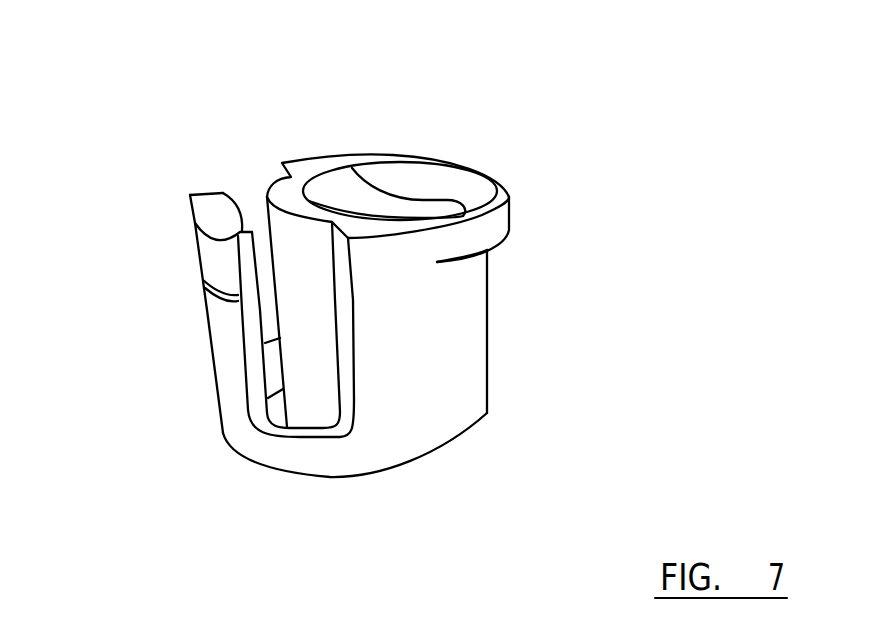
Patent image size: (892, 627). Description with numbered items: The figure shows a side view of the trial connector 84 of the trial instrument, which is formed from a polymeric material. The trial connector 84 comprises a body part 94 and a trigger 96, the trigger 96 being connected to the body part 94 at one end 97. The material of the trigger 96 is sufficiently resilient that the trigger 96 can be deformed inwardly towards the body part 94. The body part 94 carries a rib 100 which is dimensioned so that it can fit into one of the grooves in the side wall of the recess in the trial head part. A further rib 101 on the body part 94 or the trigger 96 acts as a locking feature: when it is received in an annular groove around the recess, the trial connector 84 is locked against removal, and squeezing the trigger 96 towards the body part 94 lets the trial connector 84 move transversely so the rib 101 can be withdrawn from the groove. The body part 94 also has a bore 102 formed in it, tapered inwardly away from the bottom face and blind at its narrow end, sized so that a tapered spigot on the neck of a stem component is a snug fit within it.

The trial connector 84 is at (382, 472).
The body part 94 is at (453, 353).
The trigger 96 is at (230, 367).
The end 97 is at (273, 472).
The rib 100 is at (348, 321).
The rib 101 is at (205, 283).
The bore 102 is at (427, 197).